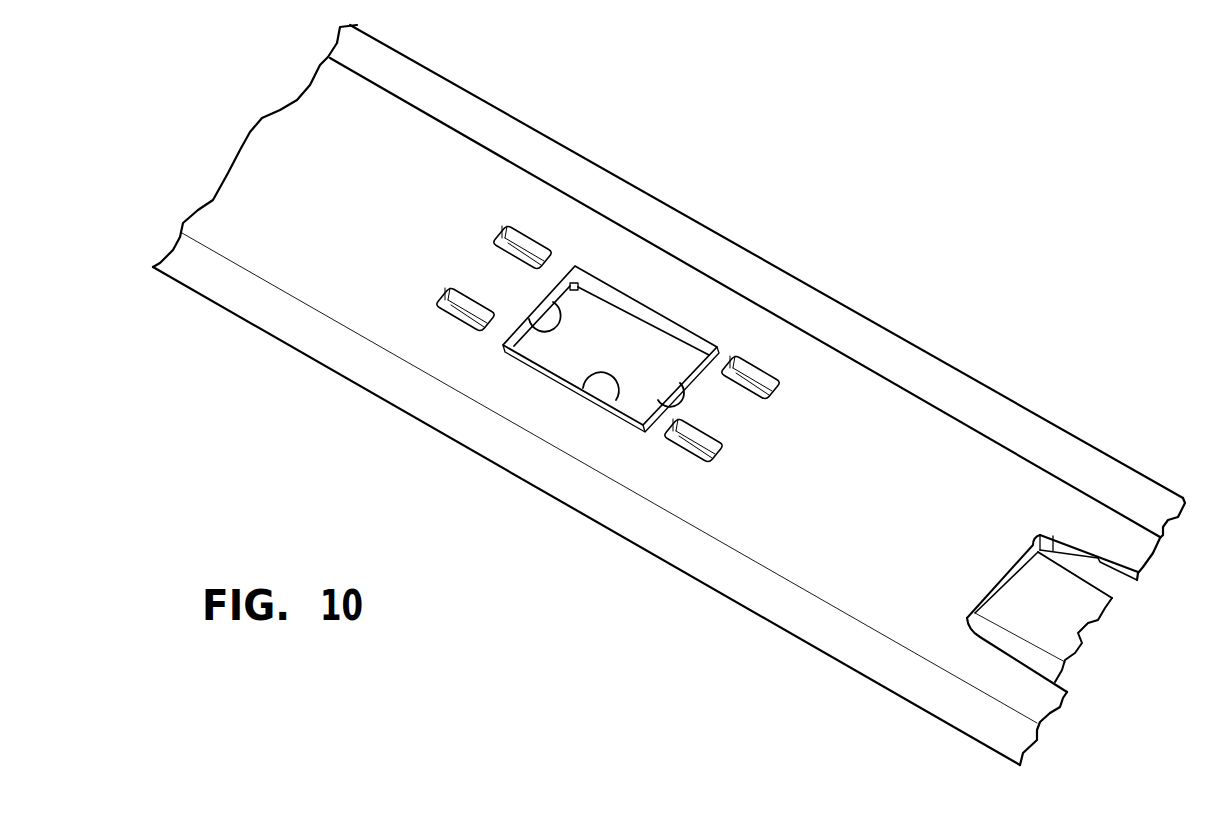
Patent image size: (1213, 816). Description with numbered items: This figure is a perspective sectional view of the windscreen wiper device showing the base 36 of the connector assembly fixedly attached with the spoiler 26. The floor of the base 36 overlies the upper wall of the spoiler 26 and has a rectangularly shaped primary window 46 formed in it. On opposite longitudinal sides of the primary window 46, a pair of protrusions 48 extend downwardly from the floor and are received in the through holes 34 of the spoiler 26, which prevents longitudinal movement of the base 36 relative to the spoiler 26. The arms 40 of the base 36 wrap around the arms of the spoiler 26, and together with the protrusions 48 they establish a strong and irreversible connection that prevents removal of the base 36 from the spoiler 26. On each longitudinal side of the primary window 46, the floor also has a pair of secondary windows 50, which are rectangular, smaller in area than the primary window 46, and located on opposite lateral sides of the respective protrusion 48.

The spoiler 26 is at (1083, 622).
The through holes 34 is at (550, 311).
The base 36 is at (842, 392).
The arms 40 is at (1120, 525).
The primary window 46 is at (590, 383).
The protrusions 48 is at (527, 335).
The secondary windows 50 is at (535, 242).